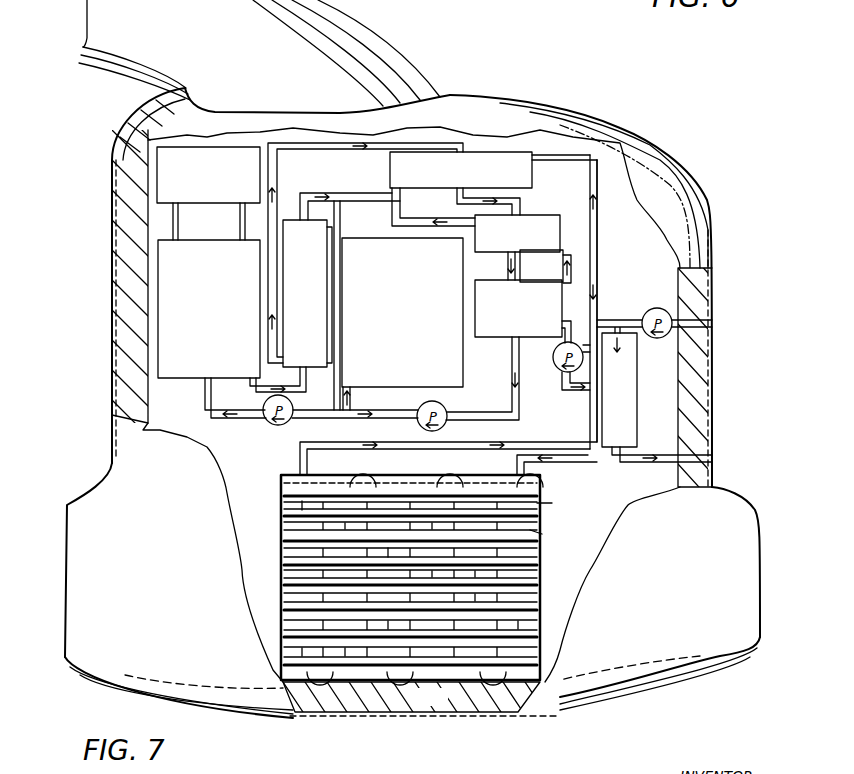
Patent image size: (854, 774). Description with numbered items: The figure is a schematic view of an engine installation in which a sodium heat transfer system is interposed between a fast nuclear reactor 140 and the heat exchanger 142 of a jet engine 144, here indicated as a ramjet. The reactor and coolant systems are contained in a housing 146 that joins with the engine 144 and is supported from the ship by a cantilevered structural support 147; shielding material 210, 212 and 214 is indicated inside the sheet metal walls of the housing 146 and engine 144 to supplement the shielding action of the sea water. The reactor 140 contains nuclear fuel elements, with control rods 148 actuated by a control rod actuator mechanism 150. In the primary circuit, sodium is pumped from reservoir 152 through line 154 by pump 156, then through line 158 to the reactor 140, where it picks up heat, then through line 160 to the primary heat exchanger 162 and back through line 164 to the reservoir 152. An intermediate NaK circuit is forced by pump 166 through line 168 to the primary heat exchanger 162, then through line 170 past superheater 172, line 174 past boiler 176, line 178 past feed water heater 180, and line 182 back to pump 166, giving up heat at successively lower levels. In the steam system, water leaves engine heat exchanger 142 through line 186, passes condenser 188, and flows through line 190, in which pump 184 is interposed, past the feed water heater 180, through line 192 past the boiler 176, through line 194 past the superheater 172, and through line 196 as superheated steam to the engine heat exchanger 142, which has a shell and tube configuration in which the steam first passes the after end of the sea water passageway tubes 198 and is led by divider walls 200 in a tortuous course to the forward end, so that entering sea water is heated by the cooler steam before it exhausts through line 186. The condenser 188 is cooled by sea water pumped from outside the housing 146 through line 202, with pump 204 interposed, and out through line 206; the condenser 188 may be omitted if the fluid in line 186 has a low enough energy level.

The fast nuclear reactor 140 is at (222, 323).
The engine heat exchanger 142 is at (607, 547).
The jet engine 144 is at (264, 724).
The housing 146 is at (112, 335).
The cantilevered structural support 147 is at (222, 28).
The control rods 148 is at (242, 227).
The control rod actuator mechanism 150 is at (220, 186).
The reservoir 152 is at (410, 340).
The line 154 is at (303, 418).
The pump 156 is at (263, 423).
The line 158 is at (204, 403).
The line 160 is at (253, 388).
The primary heat exchanger 162 is at (316, 327).
The line 164 is at (320, 193).
The pump 166 is at (447, 423).
The line 168 is at (373, 415).
The line 170 is at (296, 150).
The superheater 172 is at (510, 188).
The line 174 is at (521, 204).
The boiler 176 is at (541, 250).
The line 178 is at (521, 273).
The feed water heater 180 is at (551, 335).
The line 182 is at (463, 414).
The pump 184 is at (563, 375).
The line 186 is at (300, 458).
The condenser 188 is at (628, 381).
The line 190 is at (553, 345).
The line 192 is at (582, 262).
The line 194 is at (400, 207).
The line 196 is at (590, 176).
The sea water passageway tubes 198 is at (552, 504).
The divider walls 200 is at (542, 534).
The line 202 is at (624, 320).
The pump 204 is at (665, 336).
The line 206 is at (678, 455).
The shielding material 210 is at (142, 253).
The shielding material 212 is at (704, 376).
The shielding material 214 is at (443, 706).